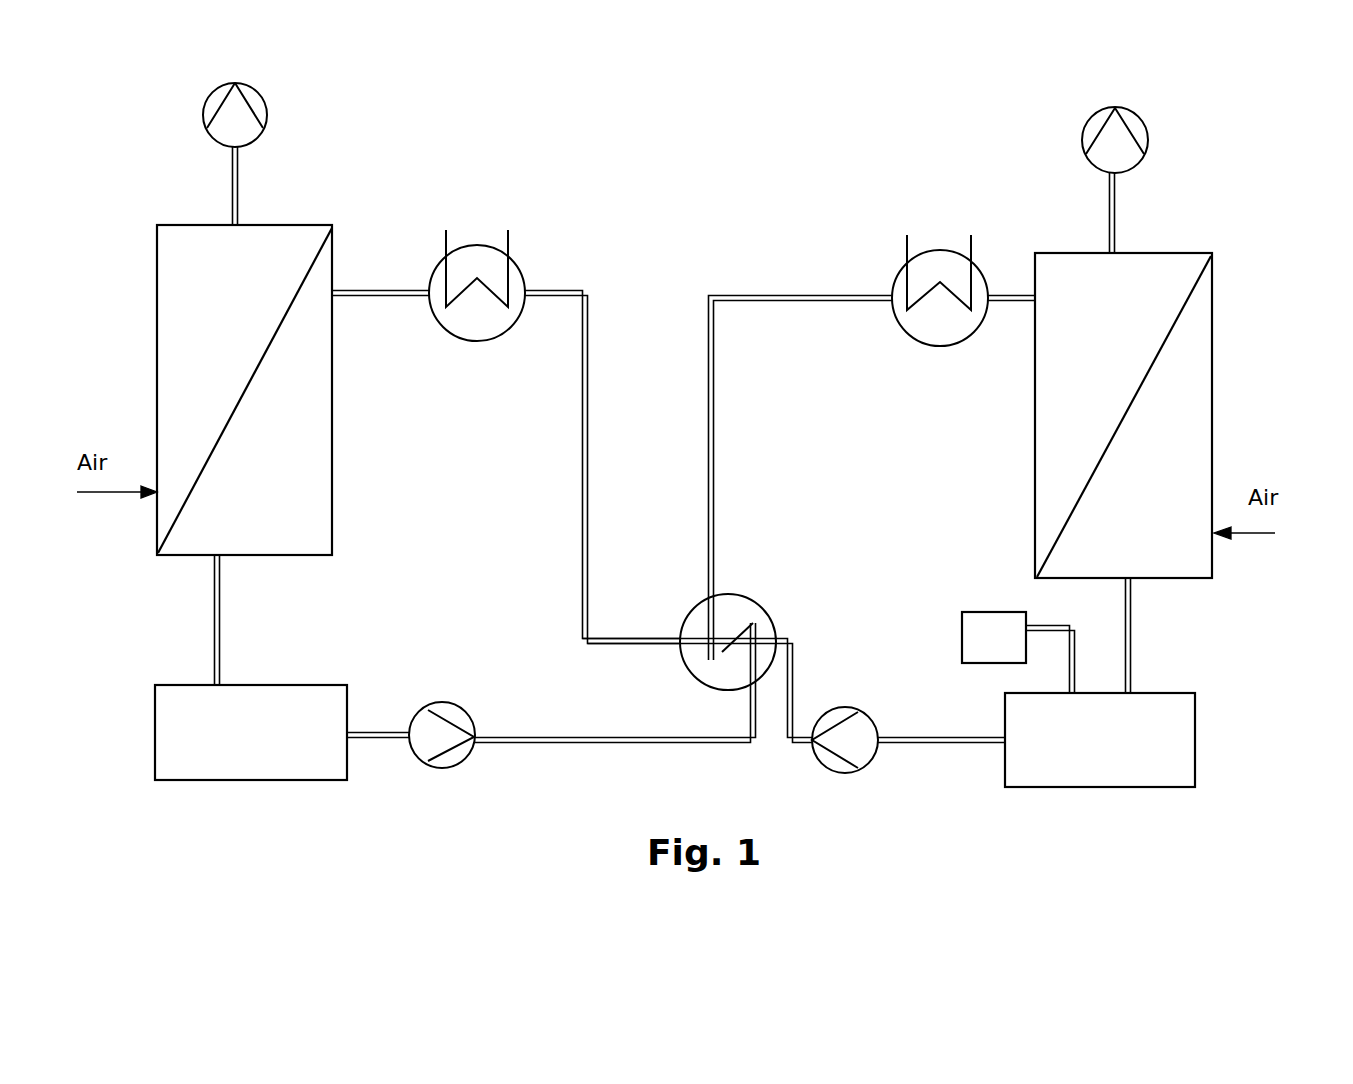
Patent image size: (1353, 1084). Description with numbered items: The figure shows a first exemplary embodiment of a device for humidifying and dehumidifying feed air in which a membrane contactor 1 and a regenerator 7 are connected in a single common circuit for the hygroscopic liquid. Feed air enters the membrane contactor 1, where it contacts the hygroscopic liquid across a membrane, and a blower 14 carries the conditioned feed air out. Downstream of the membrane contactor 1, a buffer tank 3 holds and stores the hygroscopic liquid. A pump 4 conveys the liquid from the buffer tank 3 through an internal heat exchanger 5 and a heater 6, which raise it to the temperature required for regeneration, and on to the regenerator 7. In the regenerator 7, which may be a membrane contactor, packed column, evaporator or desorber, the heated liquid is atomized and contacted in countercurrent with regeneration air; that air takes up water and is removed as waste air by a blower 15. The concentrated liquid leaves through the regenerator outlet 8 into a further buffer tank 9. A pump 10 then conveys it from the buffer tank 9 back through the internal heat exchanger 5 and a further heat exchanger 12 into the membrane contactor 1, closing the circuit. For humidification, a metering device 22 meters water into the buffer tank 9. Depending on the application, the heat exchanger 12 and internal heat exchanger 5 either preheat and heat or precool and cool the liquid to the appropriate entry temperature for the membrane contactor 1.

The membrane contactor 1 is at (244, 390).
The buffer tank 3 is at (251, 732).
The pump 4 is at (430, 722).
The internal heat exchanger 5 is at (740, 590).
The heater 6 is at (893, 282).
The regenerator 7 is at (1123, 415).
The regenerator outlet 8 is at (1145, 612).
The further buffer tank 9 is at (1100, 740).
The pump 10 is at (852, 745).
The heat exchanger 12 is at (463, 343).
The blower 14 is at (268, 117).
The blower 15 is at (1145, 157).
The metering device 22 is at (1018, 652).